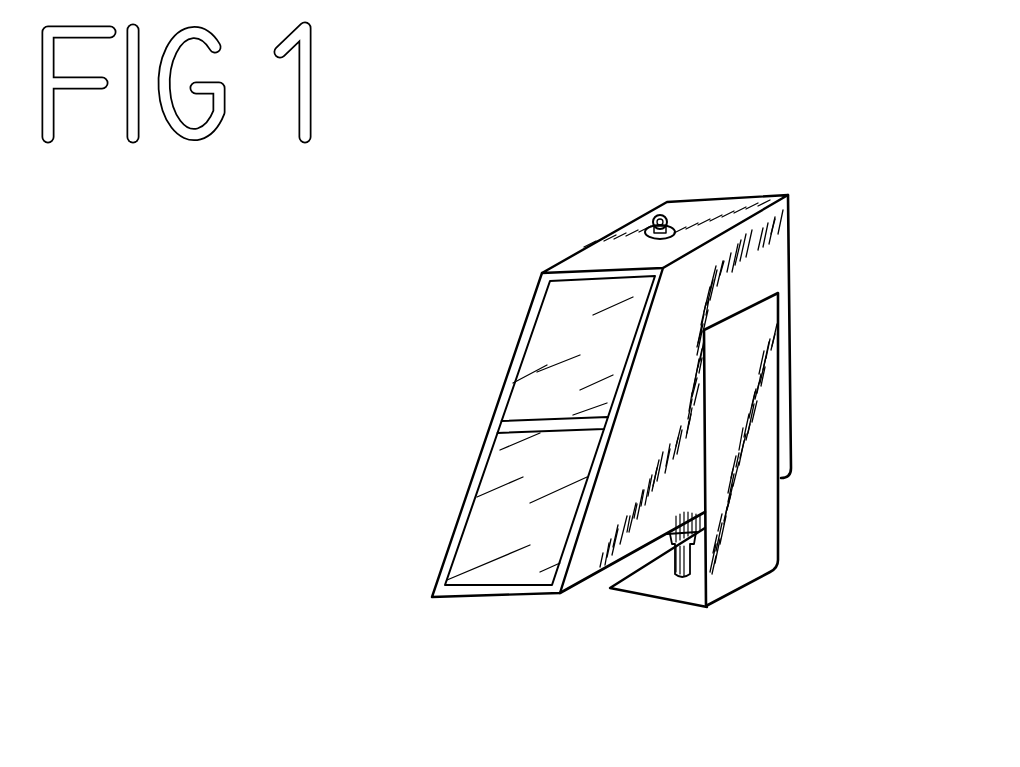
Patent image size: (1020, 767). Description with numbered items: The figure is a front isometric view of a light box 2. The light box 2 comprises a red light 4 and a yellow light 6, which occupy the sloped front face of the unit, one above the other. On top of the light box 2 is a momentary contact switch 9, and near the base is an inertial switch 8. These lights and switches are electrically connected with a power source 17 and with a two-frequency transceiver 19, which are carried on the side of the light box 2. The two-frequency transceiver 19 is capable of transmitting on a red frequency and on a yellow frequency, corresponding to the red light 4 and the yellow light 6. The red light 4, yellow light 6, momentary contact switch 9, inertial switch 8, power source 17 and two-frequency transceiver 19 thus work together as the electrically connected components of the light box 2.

The light box 2 is at (845, 74).
The red light 4 is at (567, 345).
The yellow light 6 is at (523, 497).
The inertial switch 8 is at (682, 578).
The momentary contact switch 9 is at (657, 221).
The power source 17 is at (792, 258).
The two-frequency transceiver 19 is at (792, 308).